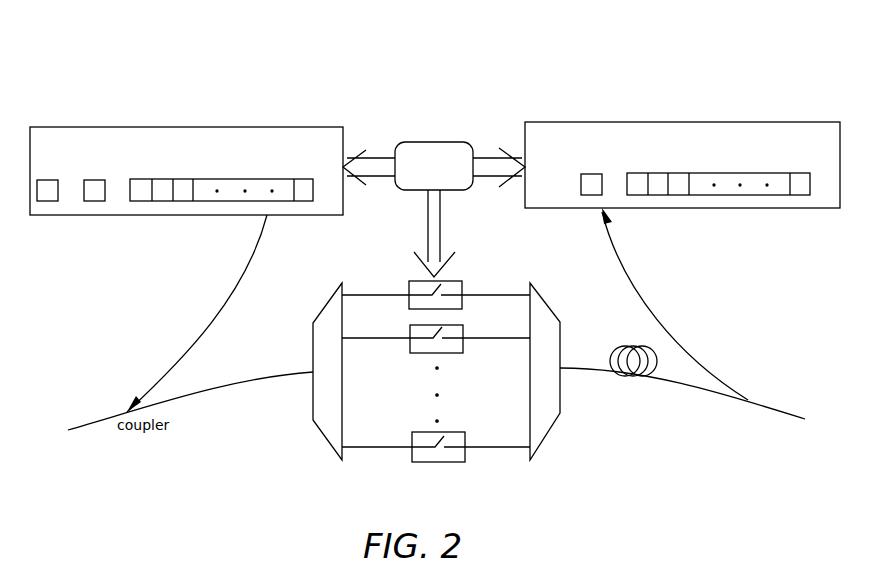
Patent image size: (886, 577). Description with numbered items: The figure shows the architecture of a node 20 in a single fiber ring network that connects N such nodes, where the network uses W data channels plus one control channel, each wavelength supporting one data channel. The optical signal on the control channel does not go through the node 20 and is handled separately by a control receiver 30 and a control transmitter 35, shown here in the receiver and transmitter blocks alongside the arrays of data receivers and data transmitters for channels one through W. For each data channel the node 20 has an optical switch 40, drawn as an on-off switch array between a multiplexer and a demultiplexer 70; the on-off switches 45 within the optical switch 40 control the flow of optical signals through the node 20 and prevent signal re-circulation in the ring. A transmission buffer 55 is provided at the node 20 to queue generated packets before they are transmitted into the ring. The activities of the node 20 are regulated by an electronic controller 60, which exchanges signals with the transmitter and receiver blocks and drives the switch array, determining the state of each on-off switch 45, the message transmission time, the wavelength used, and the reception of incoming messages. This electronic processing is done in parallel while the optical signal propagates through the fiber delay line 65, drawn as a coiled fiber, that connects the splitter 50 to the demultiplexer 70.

The node 20 is at (742, 58).
The control receiver 30 is at (708, 121).
The control transmitter 35 is at (213, 126).
The optical switch 40 is at (464, 397).
The on-off switch 45 is at (450, 354).
The splitter 50 is at (744, 432).
The transmission buffer 55 is at (47, 202).
The electronic controller 60 is at (422, 141).
The fiber delay line 65 is at (664, 384).
The demultiplexer 70 is at (562, 331).